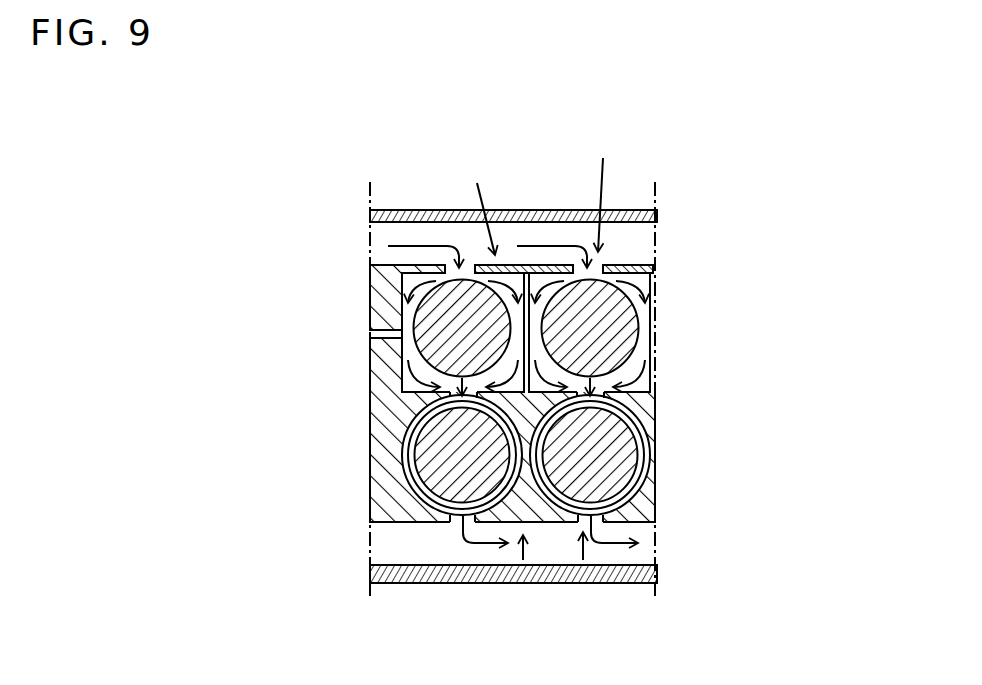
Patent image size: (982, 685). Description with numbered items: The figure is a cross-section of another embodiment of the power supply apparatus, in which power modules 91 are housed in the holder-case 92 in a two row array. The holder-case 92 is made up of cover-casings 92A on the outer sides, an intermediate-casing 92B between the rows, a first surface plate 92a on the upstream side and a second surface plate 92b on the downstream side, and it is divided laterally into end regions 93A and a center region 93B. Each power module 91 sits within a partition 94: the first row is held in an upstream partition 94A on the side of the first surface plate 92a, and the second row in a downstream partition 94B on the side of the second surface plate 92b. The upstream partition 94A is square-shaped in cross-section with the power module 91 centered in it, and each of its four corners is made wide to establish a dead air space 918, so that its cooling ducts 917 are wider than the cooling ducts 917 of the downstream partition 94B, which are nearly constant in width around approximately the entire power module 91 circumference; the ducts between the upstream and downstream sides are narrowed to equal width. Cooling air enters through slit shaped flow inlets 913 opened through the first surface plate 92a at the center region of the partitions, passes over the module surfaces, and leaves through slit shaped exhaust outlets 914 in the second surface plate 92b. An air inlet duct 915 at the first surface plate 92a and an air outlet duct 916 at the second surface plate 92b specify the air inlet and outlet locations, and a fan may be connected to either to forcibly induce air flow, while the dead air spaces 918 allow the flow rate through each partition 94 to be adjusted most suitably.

The power module 91 is at (603, 323).
The slit shaped flow inlet 913 is at (607, 187).
The slit shaped exhaust outlet 914 is at (583, 562).
The air inlet duct 915 is at (376, 238).
The air outlet duct 916 is at (383, 552).
The cooling duct 917 is at (647, 322).
The dead air space 918 is at (558, 383).
The holder-case 92 is at (282, 506).
The cover-casing 92A is at (364, 332).
The intermediate-casing 92B is at (364, 335).
The first surface plate 92a is at (470, 203).
The second surface plate 92b is at (527, 540).
The end region 93A is at (524, 357).
The center region 93B is at (444, 294).
The partition 94 is at (834, 303).
The upstream partition 94A is at (651, 327).
The downstream partition 94B is at (652, 428).